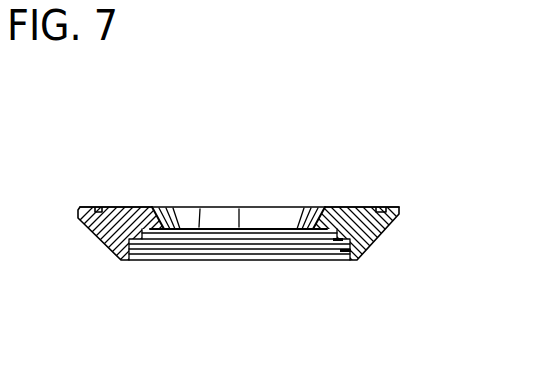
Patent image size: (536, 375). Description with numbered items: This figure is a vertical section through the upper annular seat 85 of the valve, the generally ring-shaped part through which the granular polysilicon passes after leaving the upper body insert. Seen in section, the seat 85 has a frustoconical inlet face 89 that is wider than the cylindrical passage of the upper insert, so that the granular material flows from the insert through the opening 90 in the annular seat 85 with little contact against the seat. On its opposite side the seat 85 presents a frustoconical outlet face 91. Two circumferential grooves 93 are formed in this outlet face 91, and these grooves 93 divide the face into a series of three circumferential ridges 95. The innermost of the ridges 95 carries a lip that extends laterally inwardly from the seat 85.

The upper annular seat 85 is at (381, 238).
The frustoconical inlet face 89 is at (305, 230).
The opening 90 is at (283, 227).
The frustoconical outlet face 91 is at (178, 226).
The circumferential grooves 93 is at (335, 238).
The circumferential ridges 95 is at (153, 249).